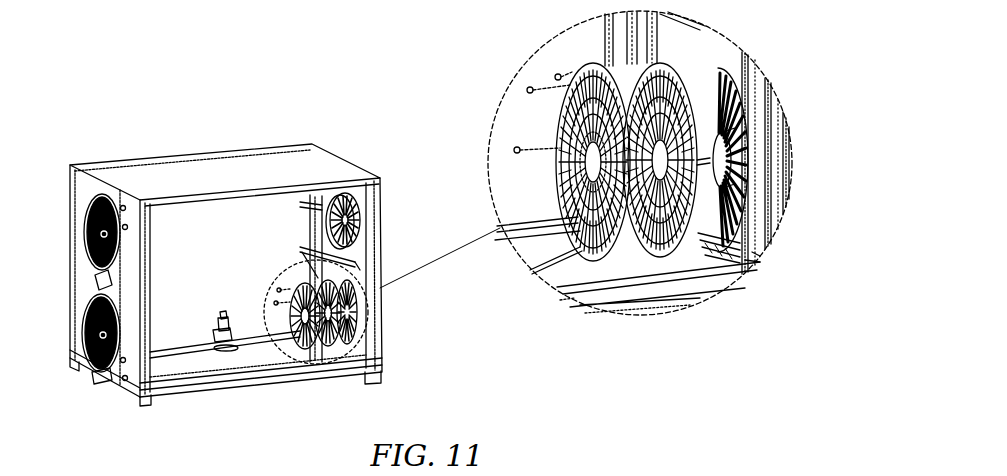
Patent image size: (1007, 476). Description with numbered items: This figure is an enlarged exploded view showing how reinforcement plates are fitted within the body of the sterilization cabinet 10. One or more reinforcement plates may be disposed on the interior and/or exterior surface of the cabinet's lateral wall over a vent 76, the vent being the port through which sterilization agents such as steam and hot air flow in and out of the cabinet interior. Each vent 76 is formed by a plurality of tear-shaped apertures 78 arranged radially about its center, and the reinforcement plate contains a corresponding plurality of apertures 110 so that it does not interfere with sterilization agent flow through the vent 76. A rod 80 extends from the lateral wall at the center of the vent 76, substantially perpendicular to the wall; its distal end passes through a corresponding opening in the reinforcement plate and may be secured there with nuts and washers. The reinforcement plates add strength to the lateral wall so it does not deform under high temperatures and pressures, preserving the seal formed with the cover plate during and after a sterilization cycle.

The sterilization cabinet 10 is at (201, 68).
The vent port 76 is at (740, 122).
The apertures 78 is at (712, 78).
The rod 80 is at (700, 160).
The apertures 110 is at (565, 186).